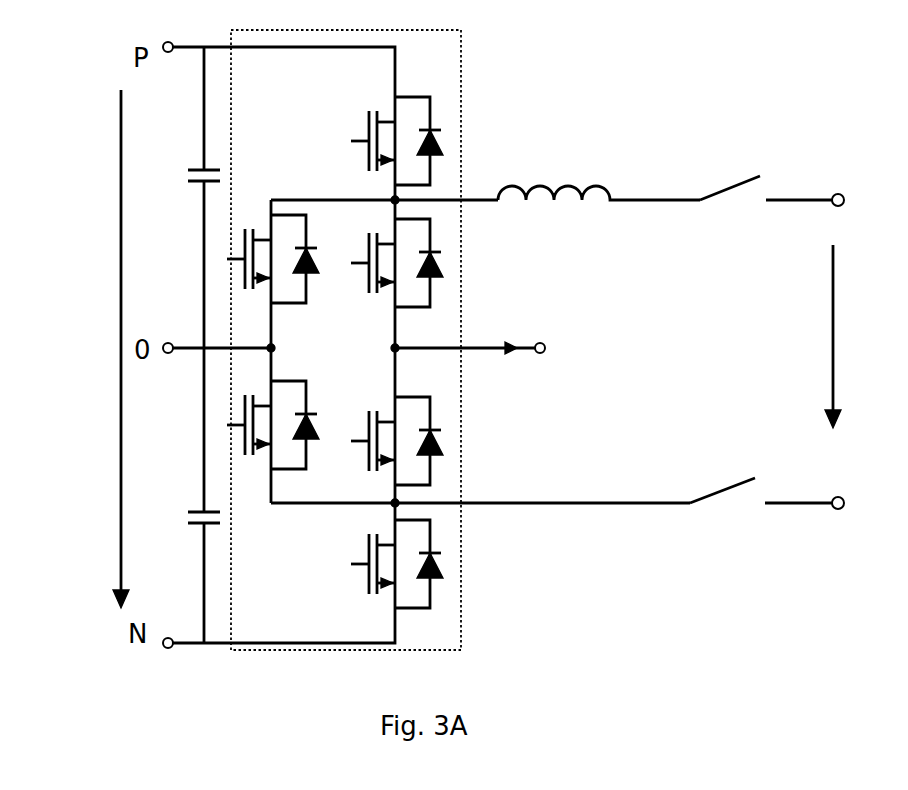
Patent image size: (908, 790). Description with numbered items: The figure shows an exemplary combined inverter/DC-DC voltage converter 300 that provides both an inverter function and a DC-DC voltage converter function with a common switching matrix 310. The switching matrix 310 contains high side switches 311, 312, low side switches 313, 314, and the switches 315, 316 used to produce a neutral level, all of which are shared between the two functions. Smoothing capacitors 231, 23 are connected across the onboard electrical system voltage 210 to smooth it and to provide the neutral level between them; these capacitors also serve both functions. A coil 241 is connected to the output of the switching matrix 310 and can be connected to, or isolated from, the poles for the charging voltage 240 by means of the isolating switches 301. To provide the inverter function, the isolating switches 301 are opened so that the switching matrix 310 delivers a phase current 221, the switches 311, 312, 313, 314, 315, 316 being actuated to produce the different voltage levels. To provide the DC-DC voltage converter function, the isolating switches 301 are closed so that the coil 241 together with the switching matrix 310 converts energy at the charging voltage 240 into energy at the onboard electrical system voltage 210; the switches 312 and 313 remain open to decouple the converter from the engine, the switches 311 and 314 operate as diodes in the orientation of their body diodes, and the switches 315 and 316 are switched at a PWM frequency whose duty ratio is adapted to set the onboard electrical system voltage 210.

The combined inverter/DC-DC voltage converter 300 is at (785, 105).
The switching matrix 310 is at (461, 63).
The high side switch T1 311 is at (358, 130).
The high side switch T2 312 is at (455, 265).
The low side switch T3 313 is at (455, 448).
The low side switch T4 314 is at (452, 573).
The switch D5 315 is at (232, 237).
The switch D6 316 is at (220, 405).
The smoothing capacitors 231 is at (222, 172).
The lower DC-link capacitor 23 is at (218, 520).
The onboard electrical system voltage 210 is at (118, 310).
The phase current 221 is at (477, 352).
The coil 241 is at (563, 182).
The isolating switches 301 is at (728, 205).
The charging voltage 240 is at (832, 340).